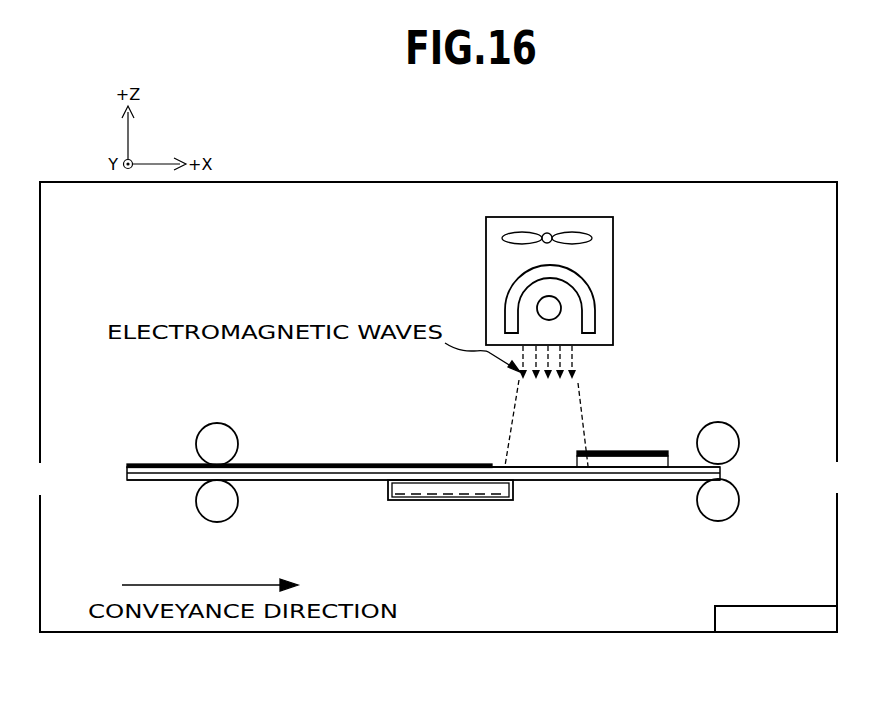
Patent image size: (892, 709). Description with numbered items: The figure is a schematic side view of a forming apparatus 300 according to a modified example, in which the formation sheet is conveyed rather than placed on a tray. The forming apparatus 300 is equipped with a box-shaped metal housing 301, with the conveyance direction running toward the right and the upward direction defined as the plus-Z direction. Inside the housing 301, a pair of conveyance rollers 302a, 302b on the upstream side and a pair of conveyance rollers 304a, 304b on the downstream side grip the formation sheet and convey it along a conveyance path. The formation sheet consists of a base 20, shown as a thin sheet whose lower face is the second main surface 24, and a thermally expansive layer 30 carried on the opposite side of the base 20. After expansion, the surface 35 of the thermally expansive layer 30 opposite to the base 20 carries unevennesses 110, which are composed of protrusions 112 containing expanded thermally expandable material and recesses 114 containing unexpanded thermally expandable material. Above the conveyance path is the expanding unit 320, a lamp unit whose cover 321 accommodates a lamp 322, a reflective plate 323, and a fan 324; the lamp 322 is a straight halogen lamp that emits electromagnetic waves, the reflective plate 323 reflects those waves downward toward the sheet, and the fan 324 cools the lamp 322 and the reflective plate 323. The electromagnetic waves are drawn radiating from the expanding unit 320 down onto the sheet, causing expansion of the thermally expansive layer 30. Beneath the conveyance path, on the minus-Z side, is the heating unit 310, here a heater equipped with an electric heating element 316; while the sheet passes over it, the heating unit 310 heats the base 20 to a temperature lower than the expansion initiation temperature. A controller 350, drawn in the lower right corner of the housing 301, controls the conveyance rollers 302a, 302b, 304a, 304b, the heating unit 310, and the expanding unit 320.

The forming apparatus 300 is at (753, 131).
The housing 301 is at (601, 182).
The expanding unit 320 is at (623, 281).
The cover 321 is at (614, 258).
The lamp 322 is at (616, 309).
The reflective plate 323 is at (584, 286).
The fan 324 is at (592, 239).
The base 20 is at (318, 476).
The second main surface 24 is at (158, 481).
The thermally expansive layer 30 is at (304, 464).
The surface 35 is at (358, 466).
The unevennesses 110 is at (594, 411).
The protrusions 112 is at (553, 466).
The recesses 114 is at (636, 434).
The heating unit 310 is at (453, 521).
The electric heating element 316 is at (494, 501).
The conveyance roller 302a is at (199, 429).
The conveyance roller 302b is at (209, 520).
The conveyance roller 304a is at (730, 426).
The conveyance roller 304b is at (738, 505).
The controller 350 is at (754, 606).